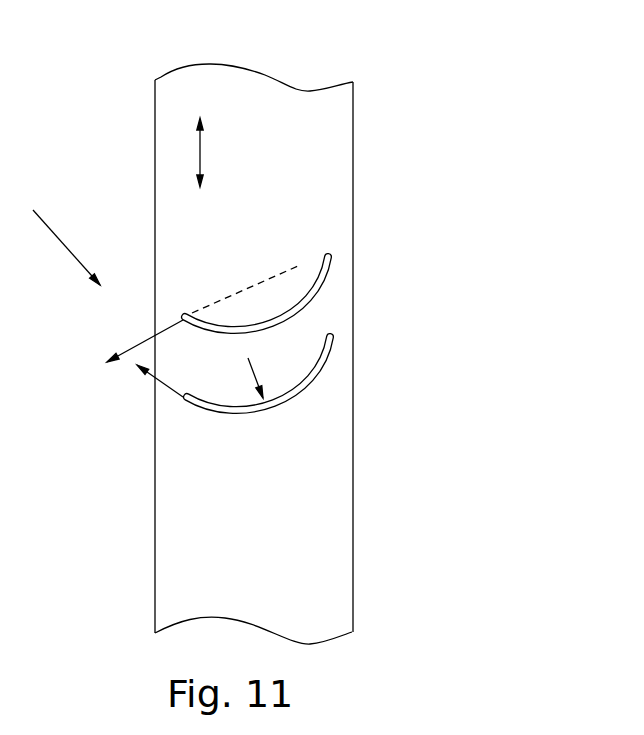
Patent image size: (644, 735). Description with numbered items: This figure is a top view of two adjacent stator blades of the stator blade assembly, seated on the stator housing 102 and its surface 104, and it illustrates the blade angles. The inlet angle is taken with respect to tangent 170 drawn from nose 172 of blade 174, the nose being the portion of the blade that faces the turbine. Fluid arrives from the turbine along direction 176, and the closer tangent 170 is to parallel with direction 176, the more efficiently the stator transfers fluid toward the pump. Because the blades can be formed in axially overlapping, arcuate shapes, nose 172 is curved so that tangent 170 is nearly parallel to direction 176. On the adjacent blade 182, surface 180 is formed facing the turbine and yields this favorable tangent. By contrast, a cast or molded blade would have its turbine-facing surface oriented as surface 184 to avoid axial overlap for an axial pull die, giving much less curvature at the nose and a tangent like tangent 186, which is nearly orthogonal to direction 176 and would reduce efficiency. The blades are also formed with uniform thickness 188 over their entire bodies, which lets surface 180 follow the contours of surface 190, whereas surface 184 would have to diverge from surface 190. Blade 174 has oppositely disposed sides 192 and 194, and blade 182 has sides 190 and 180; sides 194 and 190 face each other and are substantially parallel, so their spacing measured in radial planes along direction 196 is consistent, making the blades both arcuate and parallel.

The stator housing 102 is at (182, 95).
The surface 104 is at (290, 107).
The tangent 170 is at (157, 382).
The nose 172 is at (185, 408).
The blade 174 is at (287, 398).
The direction 176 is at (60, 242).
The surface 180 is at (270, 313).
The blade 182 is at (297, 315).
The surface 184 is at (292, 272).
The tangent 186 is at (143, 335).
The uniform thickness 188 is at (268, 414).
The surface 190 is at (313, 292).
The side 192 is at (322, 365).
The side 194 is at (307, 370).
The direction 196 is at (200, 147).